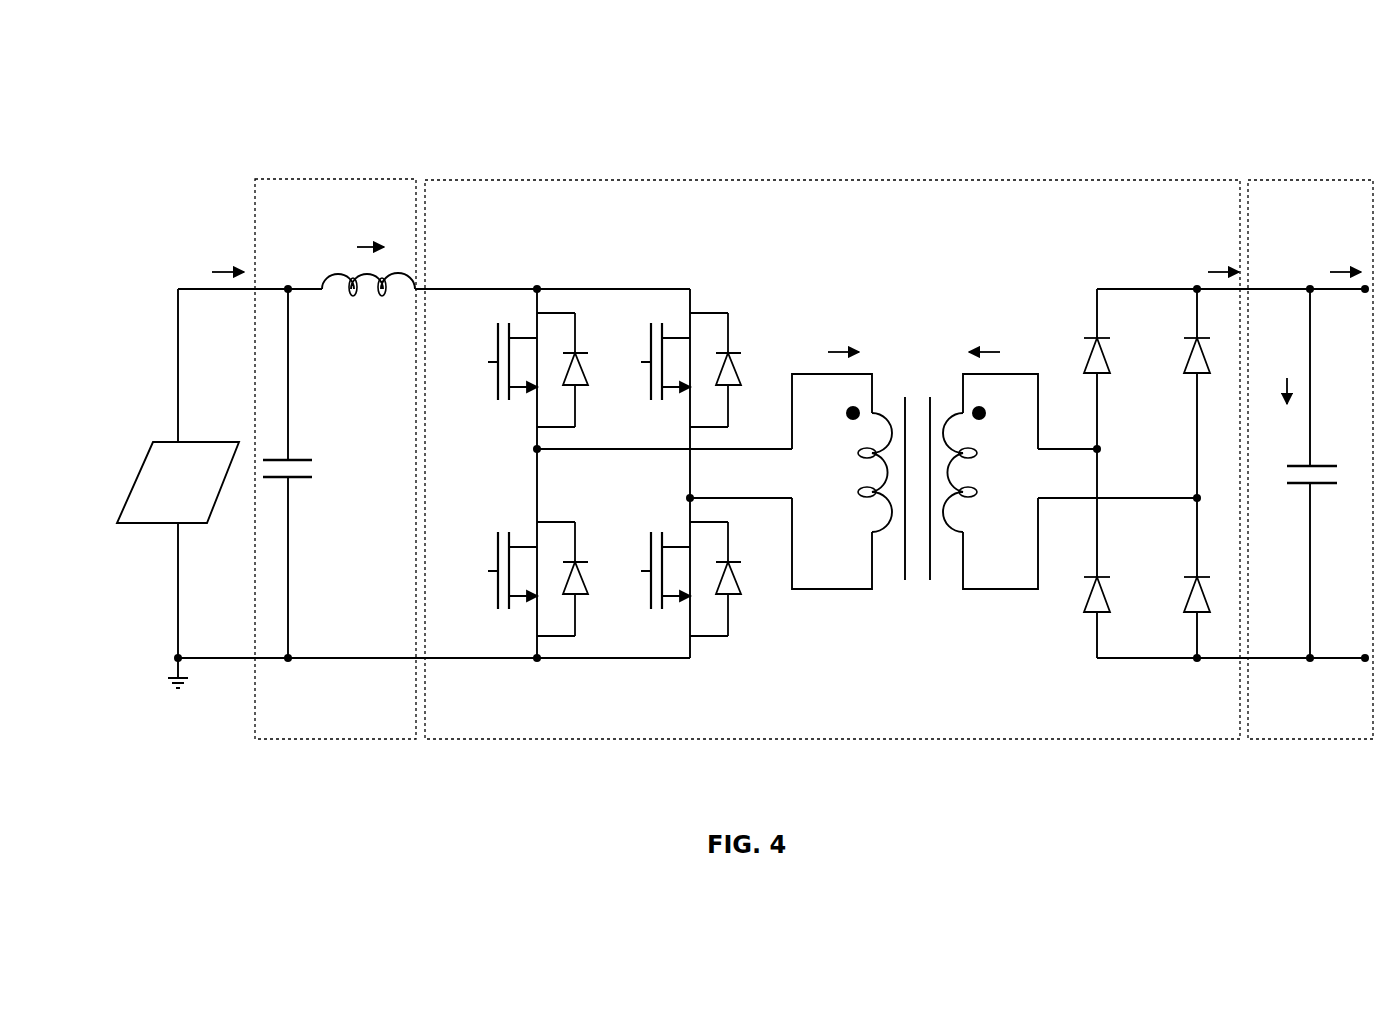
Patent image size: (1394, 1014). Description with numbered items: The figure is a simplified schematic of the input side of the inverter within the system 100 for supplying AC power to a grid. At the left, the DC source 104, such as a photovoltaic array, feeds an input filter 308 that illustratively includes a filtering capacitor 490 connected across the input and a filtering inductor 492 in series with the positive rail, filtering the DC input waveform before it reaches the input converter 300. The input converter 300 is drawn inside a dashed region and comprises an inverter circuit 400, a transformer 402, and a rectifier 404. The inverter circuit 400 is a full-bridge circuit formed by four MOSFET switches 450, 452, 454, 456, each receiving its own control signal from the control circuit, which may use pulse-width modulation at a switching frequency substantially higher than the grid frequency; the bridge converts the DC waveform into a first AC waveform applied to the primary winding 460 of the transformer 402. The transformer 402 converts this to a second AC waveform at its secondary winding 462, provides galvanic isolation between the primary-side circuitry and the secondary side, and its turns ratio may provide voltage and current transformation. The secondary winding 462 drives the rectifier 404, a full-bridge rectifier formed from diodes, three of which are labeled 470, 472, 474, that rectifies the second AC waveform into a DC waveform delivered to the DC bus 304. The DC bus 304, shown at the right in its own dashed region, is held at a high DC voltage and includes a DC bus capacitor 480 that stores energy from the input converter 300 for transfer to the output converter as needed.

The system 100 is at (1128, 91).
The DC source 104 is at (200, 442).
The input converter 300 is at (832, 180).
The DC bus 304 is at (1311, 180).
The input filter 308 is at (330, 179).
The inverter circuit 400 is at (705, 279).
The transformer 402 is at (999, 283).
The rectifier 404 is at (1133, 273).
The switch 450 is at (480, 383).
The switch 452 is at (480, 543).
The switch 454 is at (633, 383).
The switch 456 is at (633, 535).
The primary winding 460 is at (873, 379).
The secondary winding 462 is at (961, 386).
The diode 470 is at (1077, 377).
The diode 472 is at (1078, 614).
The diode 474 is at (1182, 377).
The DC bus capacitor 480 is at (1328, 459).
The filtering capacitor 490 is at (303, 452).
The filtering inductor 492 is at (319, 278).